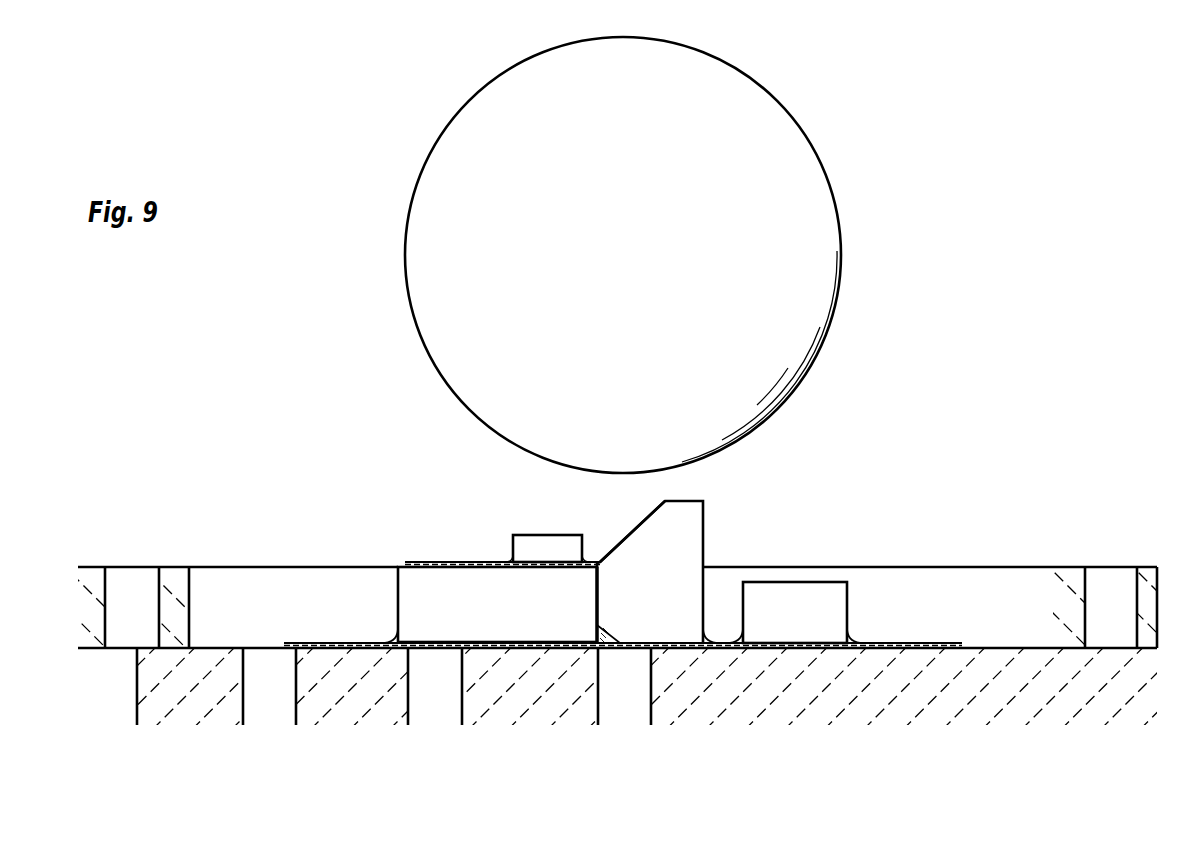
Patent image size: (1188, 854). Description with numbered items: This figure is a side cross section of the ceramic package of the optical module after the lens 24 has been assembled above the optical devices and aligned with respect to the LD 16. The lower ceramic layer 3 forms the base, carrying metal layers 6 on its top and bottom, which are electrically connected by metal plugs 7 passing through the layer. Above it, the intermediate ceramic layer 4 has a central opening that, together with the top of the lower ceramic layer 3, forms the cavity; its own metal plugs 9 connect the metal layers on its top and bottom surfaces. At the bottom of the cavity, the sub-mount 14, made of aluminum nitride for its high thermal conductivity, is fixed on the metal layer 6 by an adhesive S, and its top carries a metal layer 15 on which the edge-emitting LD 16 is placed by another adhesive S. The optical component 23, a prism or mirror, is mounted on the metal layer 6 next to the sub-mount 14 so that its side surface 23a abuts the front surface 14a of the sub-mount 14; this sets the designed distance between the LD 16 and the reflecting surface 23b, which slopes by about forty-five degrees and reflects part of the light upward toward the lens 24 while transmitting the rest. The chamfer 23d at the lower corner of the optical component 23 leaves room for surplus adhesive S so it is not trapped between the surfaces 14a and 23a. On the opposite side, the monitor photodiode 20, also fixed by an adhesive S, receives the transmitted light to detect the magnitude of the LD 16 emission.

The lens 24 is at (808, 193).
The lower ceramic layer 3 is at (998, 690).
The metal plugs 7 is at (247, 667).
The metal plugs 9 is at (107, 588).
The intermediate ceramic layer 4 is at (170, 587).
The metal layers 6 is at (937, 643).
The sub-mount 14 is at (417, 588).
The front surface 14a is at (597, 595).
The metal layer 15 is at (427, 562).
The LD 16 is at (548, 545).
The optical component 23 is at (690, 535).
The side surface 23a is at (596, 608).
The reflecting surface 23b is at (637, 525).
The chamfer 23d is at (610, 647).
The monitor photodiode 20 is at (817, 590).
The adhesive S is at (390, 637).